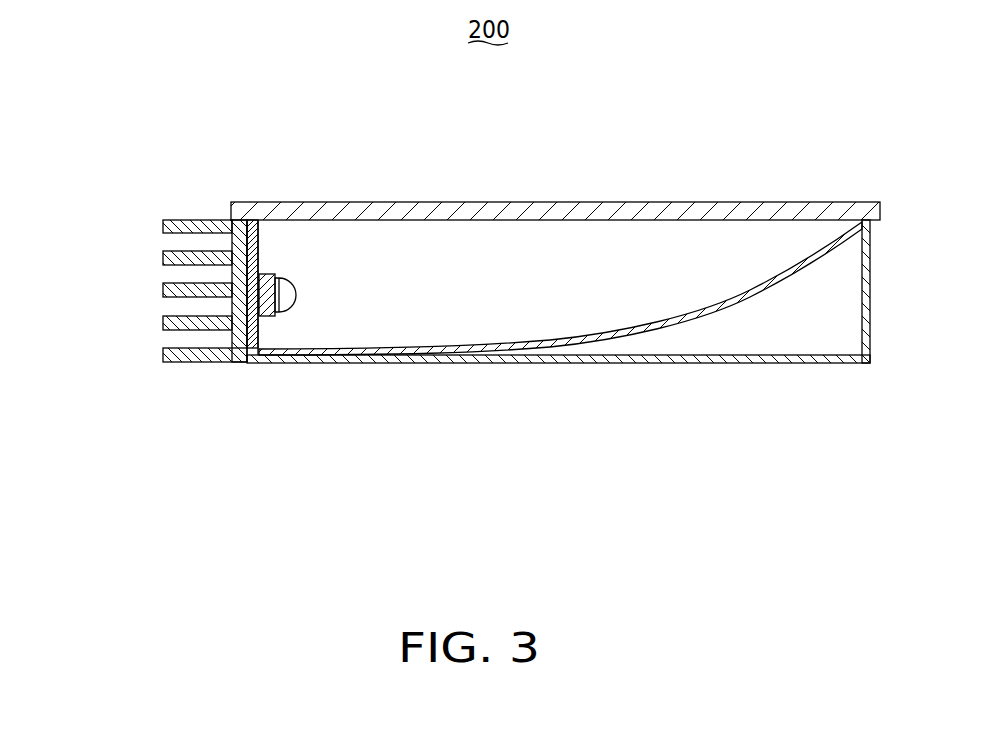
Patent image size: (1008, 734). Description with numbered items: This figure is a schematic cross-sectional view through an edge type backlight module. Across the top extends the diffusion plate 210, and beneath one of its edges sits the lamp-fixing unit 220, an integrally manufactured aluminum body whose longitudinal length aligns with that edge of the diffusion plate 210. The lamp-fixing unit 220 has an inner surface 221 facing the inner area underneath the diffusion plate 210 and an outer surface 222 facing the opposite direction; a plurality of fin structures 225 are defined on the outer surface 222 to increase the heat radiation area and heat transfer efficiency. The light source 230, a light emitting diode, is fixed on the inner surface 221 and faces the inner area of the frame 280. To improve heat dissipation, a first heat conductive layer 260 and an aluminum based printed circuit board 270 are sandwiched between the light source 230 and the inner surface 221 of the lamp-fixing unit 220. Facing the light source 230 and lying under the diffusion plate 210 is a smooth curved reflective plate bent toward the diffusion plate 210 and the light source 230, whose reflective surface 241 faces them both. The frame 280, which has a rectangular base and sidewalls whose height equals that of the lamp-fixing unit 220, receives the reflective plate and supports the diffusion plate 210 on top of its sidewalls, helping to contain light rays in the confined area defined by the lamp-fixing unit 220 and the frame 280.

The diffusion plate 210 is at (767, 210).
The lamp-fixing unit 220 is at (141, 291).
The inner surface 221 is at (230, 339).
The outer surface 222 is at (232, 273).
The fin structures 225 is at (172, 229).
The light source 230 is at (291, 294).
The reflective surface 241 is at (653, 323).
The first heat conductive layer 260 is at (252, 226).
The aluminum based printed circuit board 270 is at (259, 235).
The frame 280 is at (826, 364).